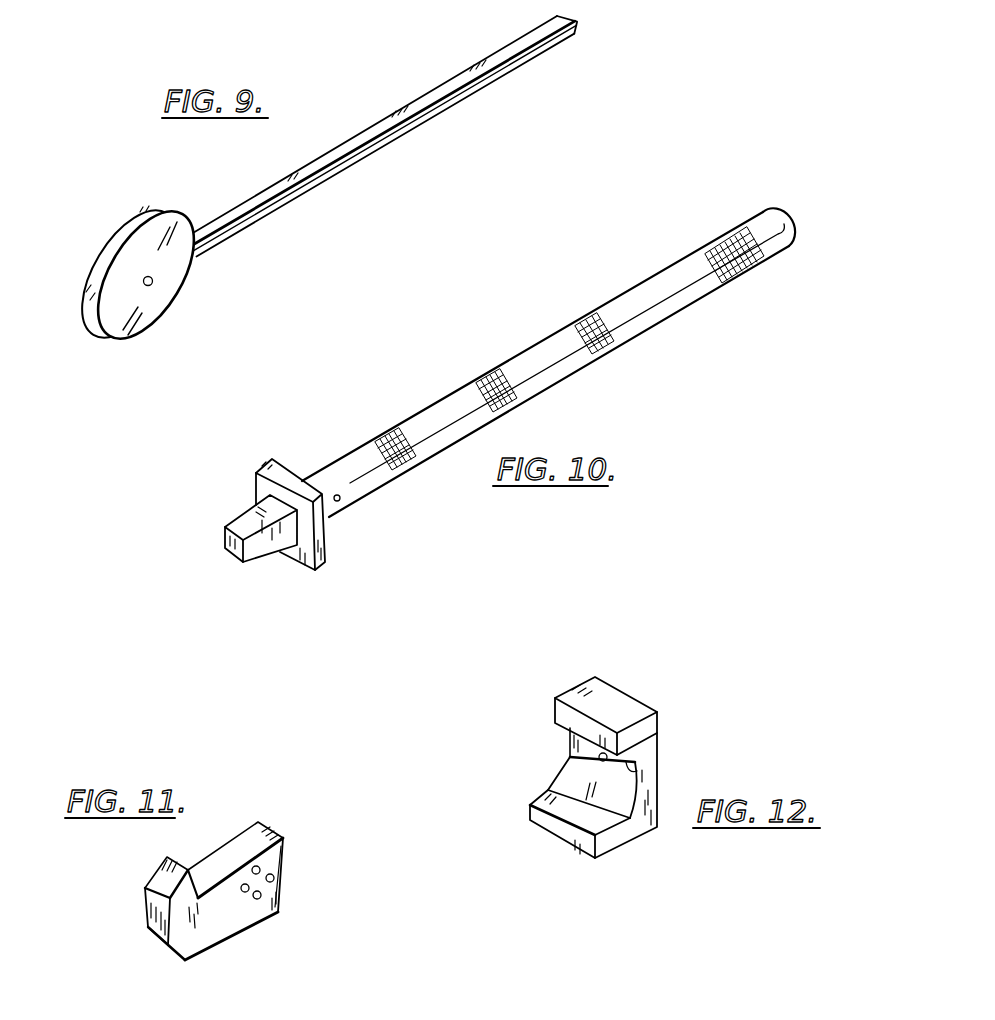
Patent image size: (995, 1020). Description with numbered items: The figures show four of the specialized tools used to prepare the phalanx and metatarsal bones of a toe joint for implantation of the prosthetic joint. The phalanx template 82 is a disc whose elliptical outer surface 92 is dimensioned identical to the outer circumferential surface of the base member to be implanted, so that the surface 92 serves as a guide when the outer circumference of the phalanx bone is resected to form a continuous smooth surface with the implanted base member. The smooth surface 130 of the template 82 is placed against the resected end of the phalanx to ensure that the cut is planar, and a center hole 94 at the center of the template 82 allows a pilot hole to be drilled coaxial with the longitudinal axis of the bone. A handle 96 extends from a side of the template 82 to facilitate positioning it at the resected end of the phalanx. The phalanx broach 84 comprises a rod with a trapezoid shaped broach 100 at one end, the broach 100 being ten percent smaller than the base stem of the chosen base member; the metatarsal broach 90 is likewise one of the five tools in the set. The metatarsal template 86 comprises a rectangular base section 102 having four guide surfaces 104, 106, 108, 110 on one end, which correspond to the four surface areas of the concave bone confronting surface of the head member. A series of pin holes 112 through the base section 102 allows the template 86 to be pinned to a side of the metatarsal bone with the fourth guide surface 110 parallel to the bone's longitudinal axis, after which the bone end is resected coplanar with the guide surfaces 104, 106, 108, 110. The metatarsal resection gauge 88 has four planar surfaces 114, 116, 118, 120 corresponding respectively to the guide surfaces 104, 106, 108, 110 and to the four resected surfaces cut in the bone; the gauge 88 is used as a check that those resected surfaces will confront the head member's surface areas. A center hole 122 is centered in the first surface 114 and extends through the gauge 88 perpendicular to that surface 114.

In FIG. 9, the phalanx template 82 is at (137, 303).
In FIG. 9, the elliptical outer surface 92 is at (95, 267).
In FIG. 9, the smooth surface 130 is at (178, 288).
In FIG. 9, the center hole 94 is at (151, 286).
In FIG. 9, the handle 96 is at (417, 124).
In FIG. 10, the phalanx broach 84 is at (510, 410).
In FIG. 10, the metatarsal broach 90 is at (578, 360).
In FIG. 10, the trapezoid shaped broach 100 is at (256, 562).
In FIG. 11, the metatarsal template 86 is at (209, 883).
In FIG. 11, the rectangular base section 102 is at (242, 913).
In FIG. 11, the first guide surface 104 is at (150, 910).
In FIG. 11, the second guide surface 106 is at (158, 882).
In FIG. 11, the third guide surface 108 is at (160, 948).
In FIG. 11, the fourth guide surface 110 is at (213, 953).
In FIG. 11, the pin holes 112 is at (265, 895).
In FIG. 12, the metatarsal resection gauge 88 is at (603, 748).
In FIG. 12, the first surface 114 is at (583, 747).
In FIG. 12, the second planar surface 116 is at (643, 768).
In FIG. 12, the third planar surface 118 is at (622, 833).
In FIG. 12, the fourth planar surface 120 is at (567, 813).
In FIG. 12, the center hole 122 is at (655, 723).